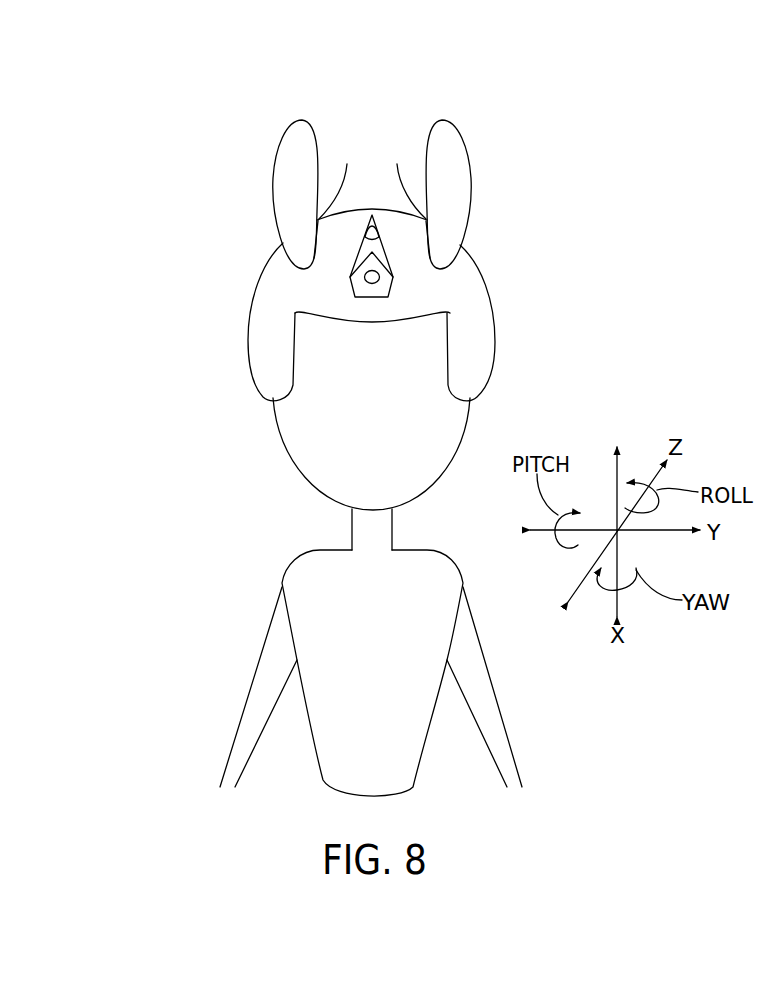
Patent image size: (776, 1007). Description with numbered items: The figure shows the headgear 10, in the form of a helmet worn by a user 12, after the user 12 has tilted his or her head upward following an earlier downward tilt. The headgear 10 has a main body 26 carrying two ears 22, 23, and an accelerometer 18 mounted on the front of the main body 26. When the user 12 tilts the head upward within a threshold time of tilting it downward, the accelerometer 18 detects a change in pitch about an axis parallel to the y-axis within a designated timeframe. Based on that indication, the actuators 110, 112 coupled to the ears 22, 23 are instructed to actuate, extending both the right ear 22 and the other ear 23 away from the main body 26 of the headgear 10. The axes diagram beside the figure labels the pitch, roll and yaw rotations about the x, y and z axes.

The headgear 10 is at (367, 112).
The user 12 is at (427, 550).
The accelerometer 18 is at (368, 222).
The right ear 22 is at (298, 137).
The ear 23 is at (446, 137).
The main body 26 is at (463, 295).
The right actuator 110 is at (340, 180).
The actuator 112 is at (404, 179).